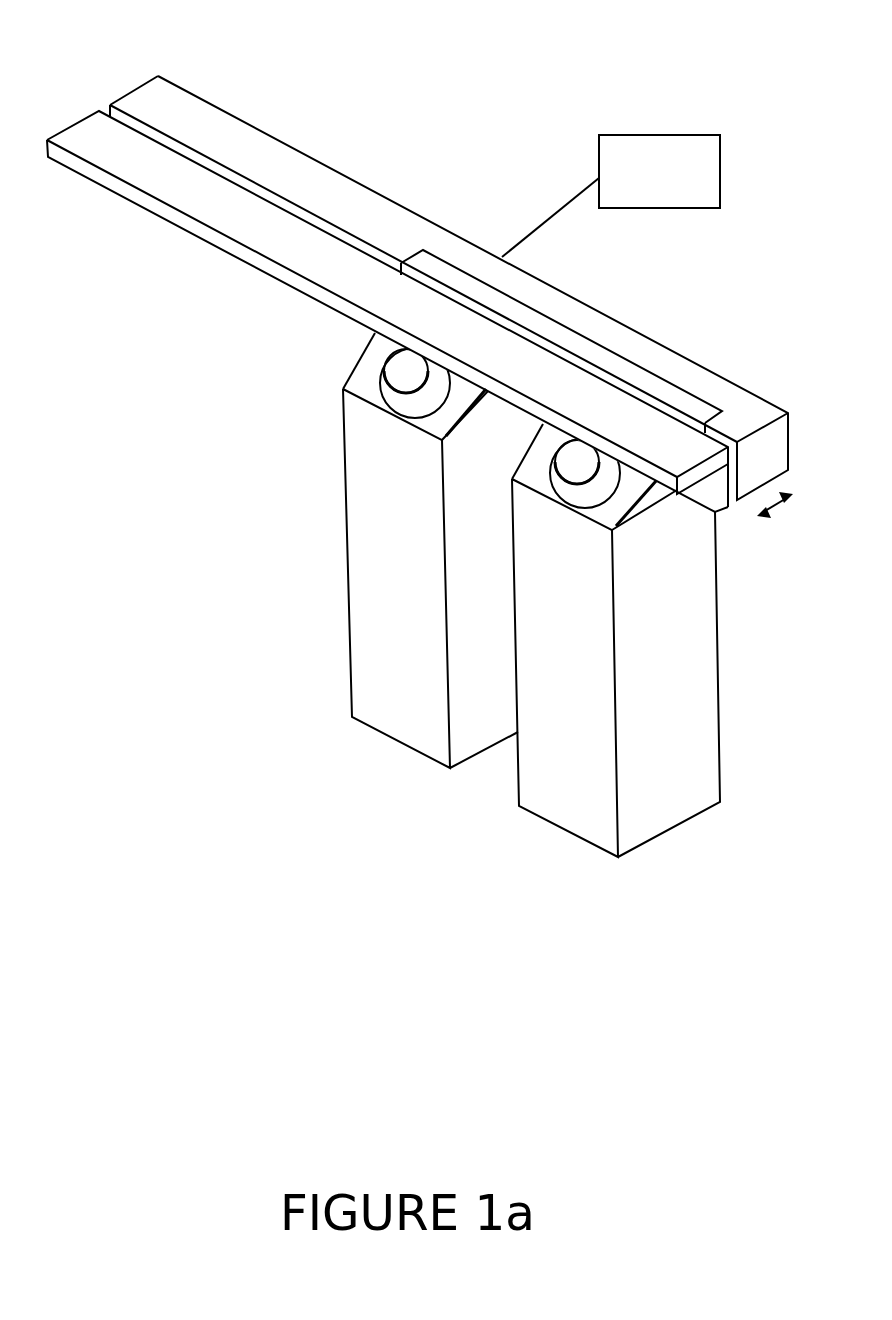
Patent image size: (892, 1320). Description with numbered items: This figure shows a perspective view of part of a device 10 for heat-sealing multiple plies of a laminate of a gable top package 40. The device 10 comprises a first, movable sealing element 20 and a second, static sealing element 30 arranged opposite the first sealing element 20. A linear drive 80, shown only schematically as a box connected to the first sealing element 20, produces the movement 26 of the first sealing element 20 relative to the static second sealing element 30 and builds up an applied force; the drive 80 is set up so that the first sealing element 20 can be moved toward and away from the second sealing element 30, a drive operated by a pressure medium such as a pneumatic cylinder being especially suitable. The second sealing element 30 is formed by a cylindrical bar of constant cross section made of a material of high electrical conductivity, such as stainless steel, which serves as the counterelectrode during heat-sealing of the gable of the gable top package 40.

The device 10 is at (382, 134).
The first sealing element 20 is at (244, 97).
The second sealing element 30 is at (162, 253).
The gable top package 40 is at (364, 601).
The linear drive 80 is at (672, 130).
The movement 26 is at (777, 522).